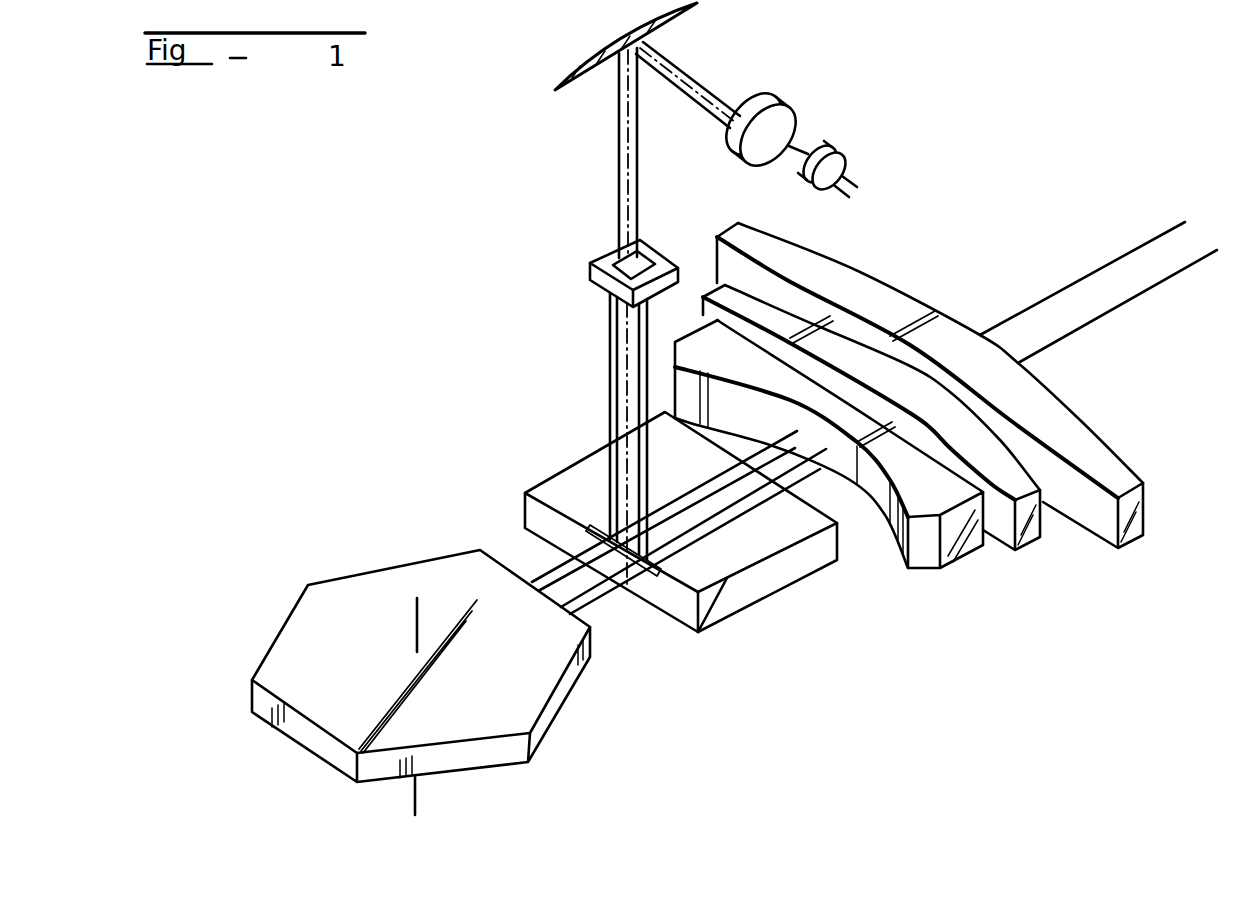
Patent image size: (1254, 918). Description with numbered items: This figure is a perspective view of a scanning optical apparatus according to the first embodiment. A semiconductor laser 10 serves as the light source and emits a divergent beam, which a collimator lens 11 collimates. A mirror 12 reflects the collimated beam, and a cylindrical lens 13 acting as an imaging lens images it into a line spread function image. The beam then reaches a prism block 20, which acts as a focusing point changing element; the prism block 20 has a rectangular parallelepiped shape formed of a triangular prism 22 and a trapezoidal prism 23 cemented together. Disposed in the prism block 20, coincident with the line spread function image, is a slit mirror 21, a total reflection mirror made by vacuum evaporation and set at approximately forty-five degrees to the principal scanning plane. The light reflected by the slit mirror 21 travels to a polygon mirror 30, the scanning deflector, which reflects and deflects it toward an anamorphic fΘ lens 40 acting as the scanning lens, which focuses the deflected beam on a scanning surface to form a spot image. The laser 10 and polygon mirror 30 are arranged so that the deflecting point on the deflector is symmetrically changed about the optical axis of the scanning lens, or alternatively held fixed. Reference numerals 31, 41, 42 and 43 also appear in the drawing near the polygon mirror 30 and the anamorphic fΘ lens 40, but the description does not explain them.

The semiconductor laser 10 is at (846, 157).
The collimator lens 11 is at (772, 100).
The mirror 12 is at (663, 27).
The cylindrical lens 13 is at (602, 257).
The prism block 20 is at (658, 516).
The slit mirror 21 is at (664, 569).
The triangular prism 22 is at (545, 490).
The trapezoidal prism 23 is at (598, 451).
The polygon mirror 30 is at (421, 652).
The axis line 31 is at (417, 606).
The anamorphic fΘ lens 40 is at (944, 395).
The front curved bar 41 is at (928, 474).
The middle curved bar 42 is at (995, 462).
The rear curved bar 43 is at (1072, 440).